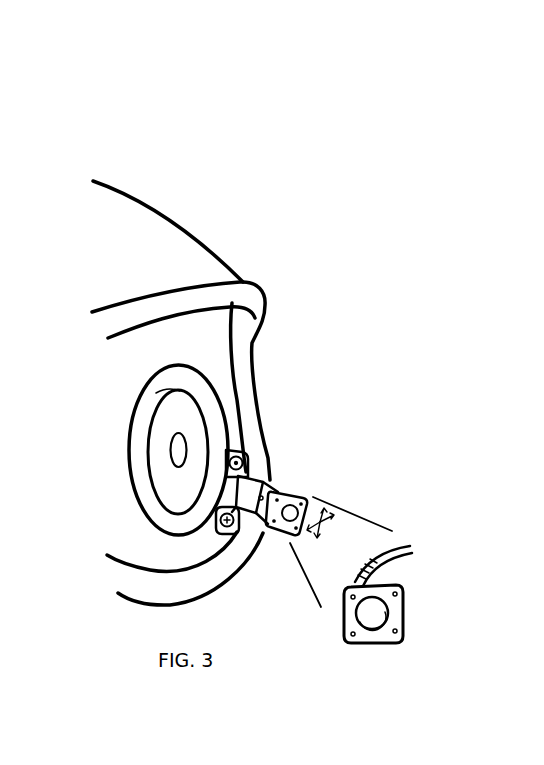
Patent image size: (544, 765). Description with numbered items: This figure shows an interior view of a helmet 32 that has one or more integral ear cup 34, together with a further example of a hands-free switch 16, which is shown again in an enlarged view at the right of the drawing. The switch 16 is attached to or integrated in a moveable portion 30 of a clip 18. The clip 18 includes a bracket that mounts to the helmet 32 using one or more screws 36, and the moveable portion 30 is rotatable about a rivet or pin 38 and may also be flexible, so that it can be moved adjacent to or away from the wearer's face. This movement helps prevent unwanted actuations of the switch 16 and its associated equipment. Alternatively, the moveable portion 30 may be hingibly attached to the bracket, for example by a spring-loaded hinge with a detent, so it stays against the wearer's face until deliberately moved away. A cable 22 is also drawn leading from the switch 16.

The hands-free switch 16 is at (380, 613).
The clip 18 is at (245, 473).
The cable 22 is at (377, 563).
The moveable portion 30 is at (290, 490).
The helmet 32 is at (222, 380).
The ear cup 34 is at (153, 467).
The screws 36 is at (230, 528).
The rivet or pin 38 is at (257, 506).